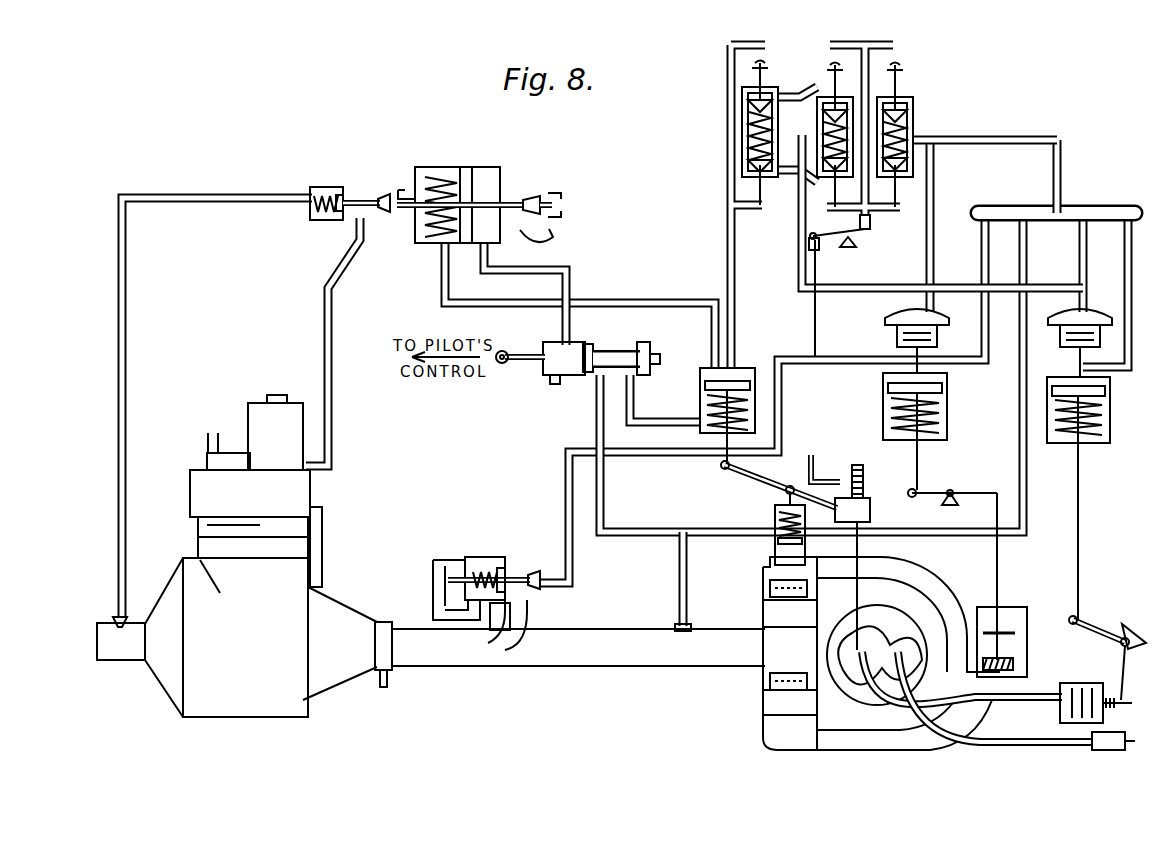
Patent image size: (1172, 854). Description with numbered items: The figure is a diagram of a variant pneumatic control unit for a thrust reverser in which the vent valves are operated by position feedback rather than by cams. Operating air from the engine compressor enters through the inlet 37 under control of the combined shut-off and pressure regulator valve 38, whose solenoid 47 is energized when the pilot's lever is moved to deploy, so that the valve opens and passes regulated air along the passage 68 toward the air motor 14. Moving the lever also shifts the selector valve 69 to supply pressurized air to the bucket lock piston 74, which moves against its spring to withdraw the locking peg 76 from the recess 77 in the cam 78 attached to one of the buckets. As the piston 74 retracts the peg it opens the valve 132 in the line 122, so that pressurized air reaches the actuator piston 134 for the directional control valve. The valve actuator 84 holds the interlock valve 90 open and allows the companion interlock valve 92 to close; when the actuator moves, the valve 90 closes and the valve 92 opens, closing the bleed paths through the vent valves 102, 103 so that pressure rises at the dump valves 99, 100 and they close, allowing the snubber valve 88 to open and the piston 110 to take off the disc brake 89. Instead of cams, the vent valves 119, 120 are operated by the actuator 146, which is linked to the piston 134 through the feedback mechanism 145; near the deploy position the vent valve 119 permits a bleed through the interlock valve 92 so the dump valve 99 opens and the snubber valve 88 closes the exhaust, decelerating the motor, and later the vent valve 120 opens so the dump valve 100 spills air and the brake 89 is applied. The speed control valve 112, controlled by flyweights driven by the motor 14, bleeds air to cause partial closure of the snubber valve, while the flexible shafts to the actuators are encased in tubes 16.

The air motor 14 is at (887, 622).
The tubes 16 is at (1030, 703).
The inlet 37 is at (130, 656).
The combined shut-off and pressure regulator valve 38 is at (258, 630).
The solenoid 47 is at (249, 416).
The passage 68 is at (603, 662).
The selector valve 69 is at (585, 353).
The piston 74 is at (466, 167).
The locking peg 76 is at (510, 202).
The recess 77 is at (545, 197).
The cam 78 is at (526, 247).
The valve actuator 84 is at (728, 127).
The snubber valve 88 is at (1002, 633).
The disc brake 89 is at (1072, 683).
The interlock valve 90 is at (743, 165).
The interlock valve 92 is at (743, 103).
The dump valve 99 is at (902, 318).
The dump valve 100 is at (1056, 335).
The vent valve 102 is at (912, 168).
The vent valve 103 is at (820, 177).
The piston 110 is at (1097, 395).
The speed control valve 112 is at (512, 557).
The vent valve 119 is at (900, 98).
The vent valve 120 is at (827, 95).
The line 122 is at (228, 193).
The valve 132 is at (352, 196).
The actuator piston 134 is at (700, 388).
The feedback mechanism 145 is at (863, 452).
The actuator 146 is at (872, 64).